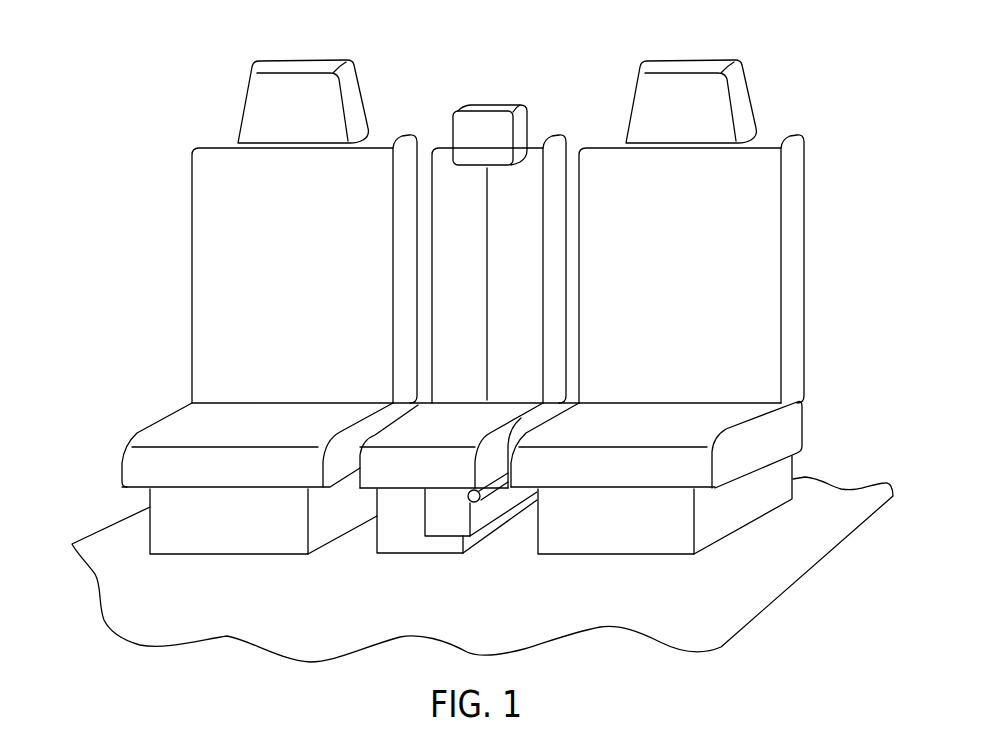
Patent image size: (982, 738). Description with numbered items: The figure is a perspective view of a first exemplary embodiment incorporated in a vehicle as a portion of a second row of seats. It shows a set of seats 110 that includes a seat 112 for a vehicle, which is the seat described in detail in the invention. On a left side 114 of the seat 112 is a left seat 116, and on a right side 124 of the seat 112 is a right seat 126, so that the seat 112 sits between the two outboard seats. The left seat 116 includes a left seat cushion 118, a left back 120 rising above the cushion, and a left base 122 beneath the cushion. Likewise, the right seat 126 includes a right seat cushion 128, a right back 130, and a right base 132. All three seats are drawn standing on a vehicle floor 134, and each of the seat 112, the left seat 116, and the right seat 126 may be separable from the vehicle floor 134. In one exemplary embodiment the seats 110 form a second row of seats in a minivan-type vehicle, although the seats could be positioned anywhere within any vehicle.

The set of seats 110 is at (431, 64).
The seat 112 is at (550, 116).
The left side 114 is at (487, 468).
The left seat 116 is at (775, 113).
The left seat cushion 118 is at (794, 424).
The left back 120 is at (794, 242).
The left base 122 is at (741, 516).
The right side 124 is at (360, 541).
The right seat 126 is at (225, 115).
The right seat cushion 128 is at (120, 463).
The right back 130 is at (192, 279).
The right base 132 is at (194, 556).
The vehicle floor 134 is at (698, 601).